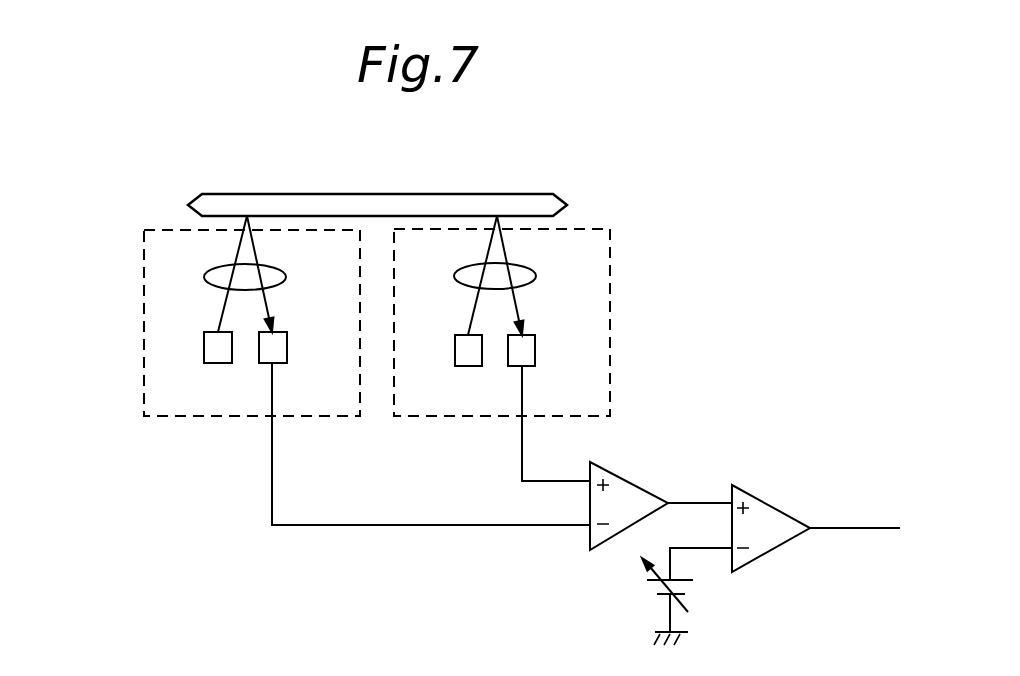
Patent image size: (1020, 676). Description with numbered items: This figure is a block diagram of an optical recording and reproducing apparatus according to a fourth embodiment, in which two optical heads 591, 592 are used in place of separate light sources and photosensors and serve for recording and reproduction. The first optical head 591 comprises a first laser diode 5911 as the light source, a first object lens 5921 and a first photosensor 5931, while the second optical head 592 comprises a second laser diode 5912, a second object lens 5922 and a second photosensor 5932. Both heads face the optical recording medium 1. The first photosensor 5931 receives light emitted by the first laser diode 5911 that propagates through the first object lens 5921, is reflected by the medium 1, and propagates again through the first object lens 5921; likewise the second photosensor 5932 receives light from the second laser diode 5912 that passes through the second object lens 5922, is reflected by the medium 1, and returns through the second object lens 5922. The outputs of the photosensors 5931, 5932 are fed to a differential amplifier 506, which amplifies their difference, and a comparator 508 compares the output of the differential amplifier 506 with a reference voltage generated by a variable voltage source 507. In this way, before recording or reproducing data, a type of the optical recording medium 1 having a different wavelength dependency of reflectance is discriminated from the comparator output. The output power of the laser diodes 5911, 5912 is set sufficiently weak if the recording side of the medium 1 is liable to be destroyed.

The optical recording medium 1 is at (488, 194).
The first optical head 591 is at (144, 298).
The second optical head 592 is at (610, 302).
The first laser diode 5911 is at (204, 344).
The second laser diode 5912 is at (455, 347).
The first object lens 5921 is at (312, 270).
The second object lens 5922 is at (562, 270).
The first photosensor 5931 is at (287, 344).
The second photosensor 5932 is at (535, 347).
The differential amplifier 506 is at (640, 480).
The variable voltage source 507 is at (697, 590).
The comparator 508 is at (780, 507).